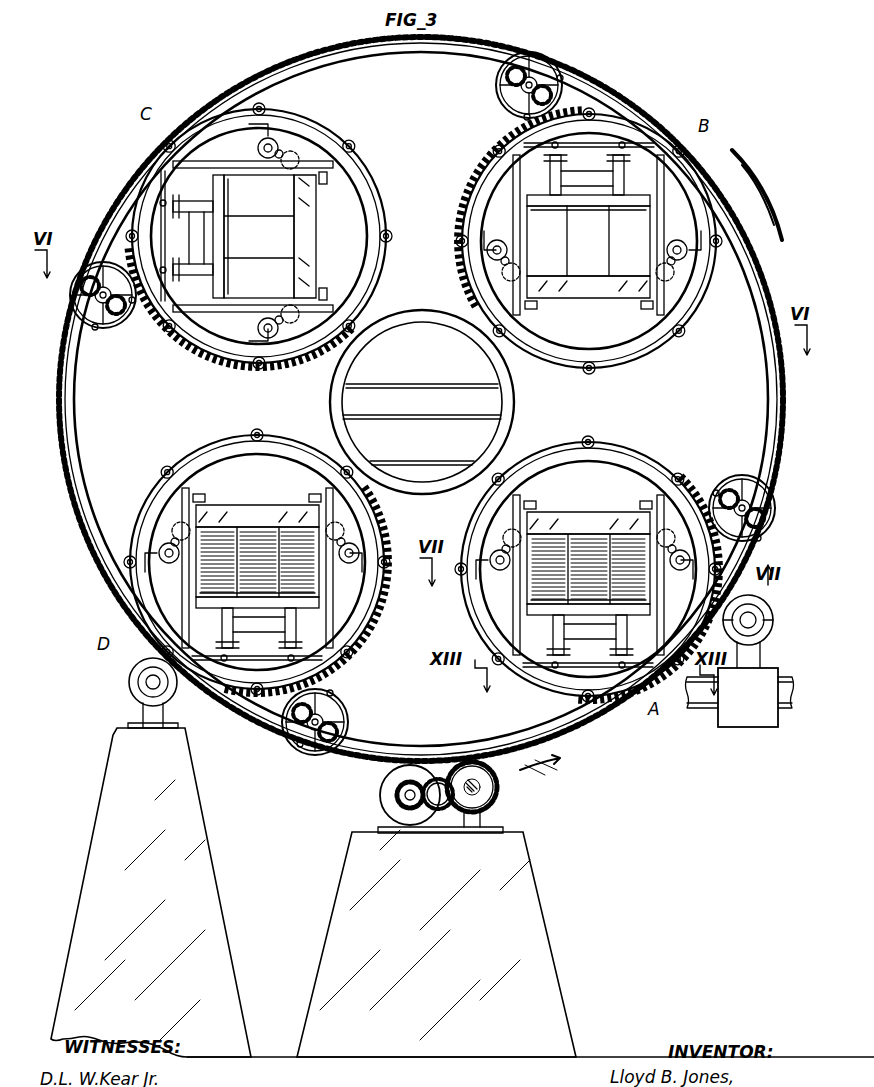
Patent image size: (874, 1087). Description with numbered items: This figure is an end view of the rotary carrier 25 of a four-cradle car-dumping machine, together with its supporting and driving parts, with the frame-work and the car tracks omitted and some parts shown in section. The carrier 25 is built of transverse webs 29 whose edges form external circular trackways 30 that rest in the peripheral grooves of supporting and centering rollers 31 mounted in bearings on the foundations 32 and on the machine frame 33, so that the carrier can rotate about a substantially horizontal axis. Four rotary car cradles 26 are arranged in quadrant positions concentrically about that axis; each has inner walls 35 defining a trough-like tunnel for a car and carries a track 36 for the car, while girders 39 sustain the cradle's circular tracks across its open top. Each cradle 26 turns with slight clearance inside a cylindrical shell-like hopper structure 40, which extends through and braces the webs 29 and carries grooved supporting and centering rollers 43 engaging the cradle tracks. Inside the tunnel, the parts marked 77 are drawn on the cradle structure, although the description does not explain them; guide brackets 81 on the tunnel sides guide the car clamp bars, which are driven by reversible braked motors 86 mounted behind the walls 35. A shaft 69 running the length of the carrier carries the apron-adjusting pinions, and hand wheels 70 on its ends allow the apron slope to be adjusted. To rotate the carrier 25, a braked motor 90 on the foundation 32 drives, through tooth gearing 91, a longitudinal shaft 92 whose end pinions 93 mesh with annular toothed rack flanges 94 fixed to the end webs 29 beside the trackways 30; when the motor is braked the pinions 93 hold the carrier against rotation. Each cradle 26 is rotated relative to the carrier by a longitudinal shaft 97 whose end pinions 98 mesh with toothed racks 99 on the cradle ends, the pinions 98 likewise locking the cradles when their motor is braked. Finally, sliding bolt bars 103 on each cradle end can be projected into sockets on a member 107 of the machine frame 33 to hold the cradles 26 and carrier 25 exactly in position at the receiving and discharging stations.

The rotary carrier 25 is at (767, 194).
The rotary car cradle 26 is at (288, 120).
The transverse web 29 is at (78, 484).
The external circular trackway 30 is at (90, 572).
The supporting and centering roller 31 is at (128, 680).
The foundation 32 is at (462, 892).
The machine frame 33 is at (706, 724).
The inner wall 35 is at (658, 598).
The track 36 is at (602, 640).
The girder 39 is at (379, 256).
The shell-like hopper structure 40 is at (376, 192).
The supporting and centering roller 43 is at (376, 151).
The shaft 69 is at (95, 292).
The hand wheel 70 is at (93, 262).
The mold box 77 is at (423, 389).
The guide bracket 81 is at (636, 492).
The motor 86 is at (264, 147).
The motor 90 is at (379, 797).
The tooth gearing 91 is at (454, 766).
The longitudinal shaft 92 is at (497, 788).
The toothed pinion 93 is at (479, 800).
The annular toothed rack flange 94 is at (540, 770).
The longitudinal shaft 97 is at (100, 328).
The toothed pinion 98 is at (134, 302).
The toothed rack 99 is at (230, 349).
The sliding bolt bar 103 is at (606, 665).
The member 107 is at (330, 400).